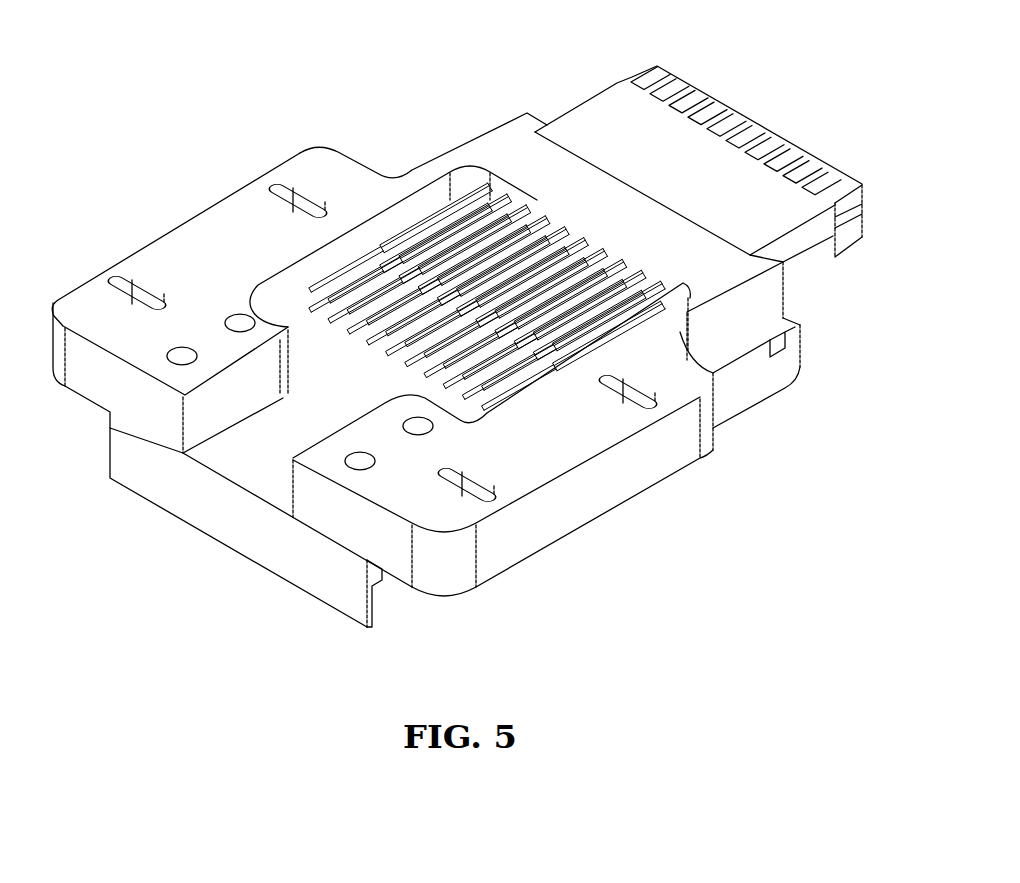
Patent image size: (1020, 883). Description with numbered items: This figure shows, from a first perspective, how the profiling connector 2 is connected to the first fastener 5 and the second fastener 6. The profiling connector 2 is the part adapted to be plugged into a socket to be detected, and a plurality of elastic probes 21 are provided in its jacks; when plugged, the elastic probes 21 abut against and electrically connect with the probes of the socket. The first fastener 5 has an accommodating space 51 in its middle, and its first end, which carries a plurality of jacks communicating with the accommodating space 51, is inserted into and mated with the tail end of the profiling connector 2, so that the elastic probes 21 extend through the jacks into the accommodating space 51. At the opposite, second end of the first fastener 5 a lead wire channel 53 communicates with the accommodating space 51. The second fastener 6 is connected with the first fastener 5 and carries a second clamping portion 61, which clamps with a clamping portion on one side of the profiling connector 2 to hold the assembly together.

The profiling connector 2 is at (681, 158).
The elastic probe 21 is at (485, 230).
The first fastener 5 is at (613, 392).
The accommodating space 51 is at (445, 400).
The lead wire channel 53 is at (270, 432).
The second fastener 6 is at (751, 375).
The second clamping portion 61 is at (774, 345).